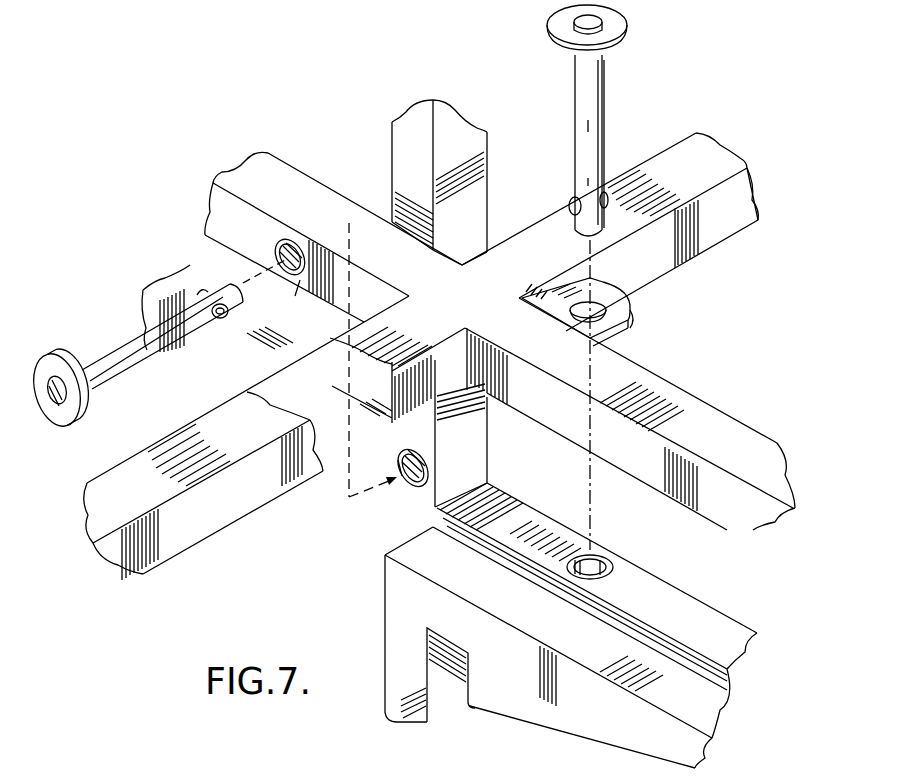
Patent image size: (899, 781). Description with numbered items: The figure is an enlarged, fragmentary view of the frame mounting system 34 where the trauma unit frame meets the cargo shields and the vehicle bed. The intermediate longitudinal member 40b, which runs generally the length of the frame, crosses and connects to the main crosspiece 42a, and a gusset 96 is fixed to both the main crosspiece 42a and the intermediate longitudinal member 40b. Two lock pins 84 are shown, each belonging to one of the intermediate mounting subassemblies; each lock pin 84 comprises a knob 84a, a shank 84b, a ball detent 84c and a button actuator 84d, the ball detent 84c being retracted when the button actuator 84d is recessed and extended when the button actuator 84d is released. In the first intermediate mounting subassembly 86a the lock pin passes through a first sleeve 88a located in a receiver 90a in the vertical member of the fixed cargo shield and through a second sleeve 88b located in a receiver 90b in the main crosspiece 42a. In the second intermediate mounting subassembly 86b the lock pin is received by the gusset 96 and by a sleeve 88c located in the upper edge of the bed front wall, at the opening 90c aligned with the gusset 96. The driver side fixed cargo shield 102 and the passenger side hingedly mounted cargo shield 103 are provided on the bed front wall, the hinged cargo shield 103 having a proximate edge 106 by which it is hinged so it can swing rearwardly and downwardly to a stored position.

The frame mounting system 34 is at (760, 222).
The intermediate longitudinal member 40b is at (233, 512).
The main crosspiece 42a is at (562, 418).
The lock pin 84 is at (362, 222).
The knob 84a is at (625, 32).
The shank 84b is at (607, 107).
The ball detent 84c is at (575, 214).
The button actuator 84d is at (603, 20).
The first intermediate mounting subassembly 86a is at (198, 243).
The second intermediate mounting subassembly 86b is at (690, 286).
The first sleeve 88a is at (432, 471).
The second sleeve 88b is at (295, 298).
The sleeve 88c is at (606, 578).
The receiver 90a is at (397, 466).
The receiver 90b is at (279, 247).
The aligned hole 90c is at (609, 561).
The gusset 96 is at (630, 325).
The driver side fixed cargo shield 102 is at (338, 457).
The passenger side hingedly mounted cargo shield 103 is at (473, 160).
The proximate edge 106 is at (385, 555).